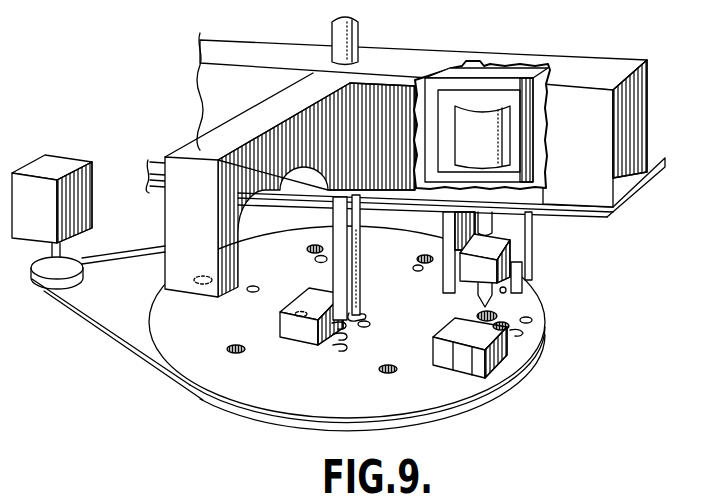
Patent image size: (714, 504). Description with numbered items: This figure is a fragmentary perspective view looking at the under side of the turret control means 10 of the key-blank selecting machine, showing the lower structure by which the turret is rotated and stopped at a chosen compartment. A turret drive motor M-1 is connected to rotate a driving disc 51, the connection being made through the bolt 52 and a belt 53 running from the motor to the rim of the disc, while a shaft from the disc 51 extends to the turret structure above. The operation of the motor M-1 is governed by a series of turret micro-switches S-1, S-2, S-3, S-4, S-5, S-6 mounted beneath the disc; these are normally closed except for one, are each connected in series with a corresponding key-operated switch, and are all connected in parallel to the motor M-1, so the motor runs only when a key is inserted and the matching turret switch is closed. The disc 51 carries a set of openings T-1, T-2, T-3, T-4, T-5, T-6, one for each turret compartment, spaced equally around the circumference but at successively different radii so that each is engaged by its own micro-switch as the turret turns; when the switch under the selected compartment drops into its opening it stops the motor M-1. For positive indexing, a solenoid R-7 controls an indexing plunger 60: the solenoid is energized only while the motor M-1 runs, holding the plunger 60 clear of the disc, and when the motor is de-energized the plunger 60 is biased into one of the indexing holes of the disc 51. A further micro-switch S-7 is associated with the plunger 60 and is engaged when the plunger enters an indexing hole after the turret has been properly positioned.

The turntable apparatus 10 is at (400, 210).
The driving disc 51 is at (543, 362).
The bolt 52 is at (357, 200).
The drive belt 53 is at (107, 333).
The indexing plunger 60 is at (488, 232).
The turret drive motor M-1 is at (55, 163).
The solenoid R-7 is at (482, 125).
The turret micro-switch S-1 is at (315, 287).
The turret micro-switch S-2 is at (303, 303).
The turret micro-switch S-3 is at (280, 312).
The turret micro-switch S-4 is at (445, 353).
The turret micro-switch S-5 is at (477, 380).
The turret micro-switch S-6 is at (497, 372).
The micro-switch S-7 is at (518, 273).
The opening T-1 is at (370, 324).
The opening T-2 is at (299, 320).
The opening T-3 is at (252, 285).
The opening T-4 is at (328, 260).
The opening T-5 is at (416, 271).
The opening T-6 is at (532, 318).